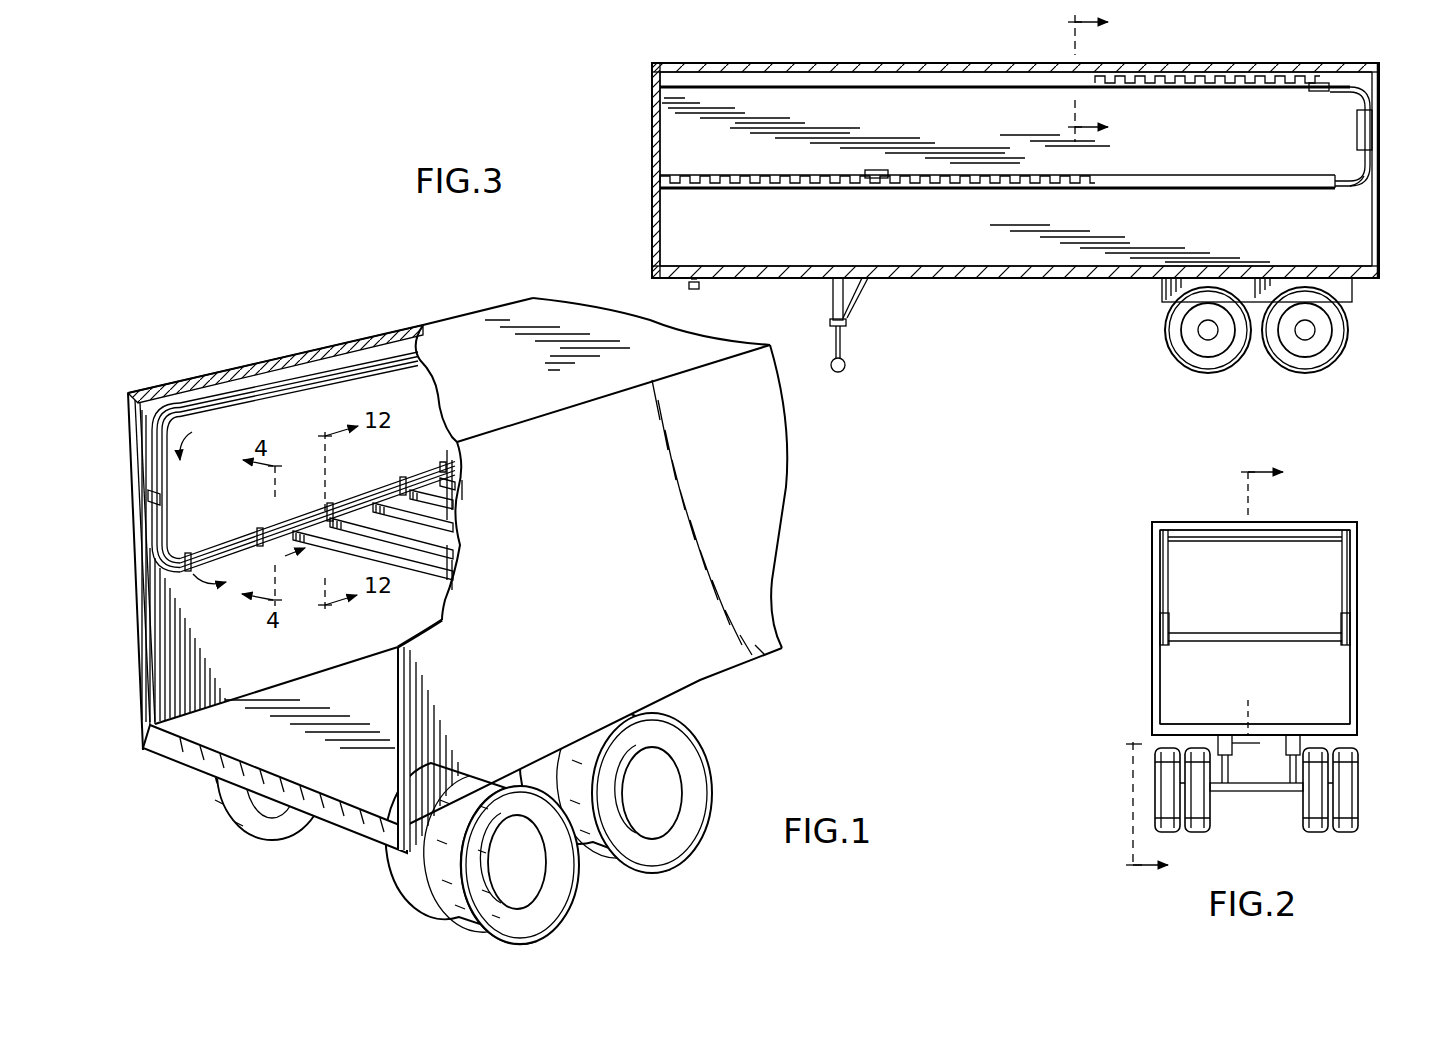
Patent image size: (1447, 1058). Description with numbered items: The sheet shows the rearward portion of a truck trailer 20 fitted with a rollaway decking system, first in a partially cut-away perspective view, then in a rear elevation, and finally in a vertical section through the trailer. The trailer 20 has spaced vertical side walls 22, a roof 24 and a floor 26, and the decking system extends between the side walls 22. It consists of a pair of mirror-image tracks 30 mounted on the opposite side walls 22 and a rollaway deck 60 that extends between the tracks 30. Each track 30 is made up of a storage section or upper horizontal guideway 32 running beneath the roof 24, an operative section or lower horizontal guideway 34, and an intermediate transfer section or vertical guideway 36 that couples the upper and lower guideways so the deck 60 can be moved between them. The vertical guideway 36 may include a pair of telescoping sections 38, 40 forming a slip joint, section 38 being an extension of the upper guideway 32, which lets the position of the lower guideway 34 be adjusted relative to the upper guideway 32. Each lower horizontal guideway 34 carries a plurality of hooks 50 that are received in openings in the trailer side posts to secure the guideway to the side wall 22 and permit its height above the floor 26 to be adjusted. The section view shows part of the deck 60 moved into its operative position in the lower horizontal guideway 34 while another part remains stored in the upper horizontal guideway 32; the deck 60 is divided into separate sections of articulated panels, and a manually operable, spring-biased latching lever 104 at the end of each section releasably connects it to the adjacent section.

In FIG. 3, the truck trailer 20 is at (647, 80).
In FIG. 2, the truck trailer 20 is at (1149, 558).
In FIG. 1, the truck trailer 20 is at (706, 698).
In FIG. 3, the side walls 22 is at (1283, 250).
In FIG. 2, the side walls 22 is at (1152, 672).
In FIG. 1, the side walls 22 is at (140, 677).
In FIG. 3, the roof 24 is at (858, 64).
In FIG. 2, the roof 24 is at (1182, 523).
In FIG. 1, the roof 24 is at (468, 322).
In FIG. 3, the floor 26 is at (978, 270).
In FIG. 2, the floor 26 is at (1308, 722).
In FIG. 1, the floor 26 is at (290, 747).
In FIG. 3, the tracks 30 is at (727, 90).
In FIG. 2, the tracks 30 is at (1169, 586).
In FIG. 1, the tracks 30 is at (146, 430).
In FIG. 3, the upper horizontal guideway 32 is at (835, 80).
In FIG. 1, the upper horizontal guideway 32 is at (305, 372).
In FIG. 3, the lower horizontal guideway 34 is at (1163, 186).
In FIG. 1, the lower horizontal guideway 34 is at (238, 550).
In FIG. 3, the vertical guideway 36 is at (1353, 131).
In FIG. 1, the vertical guideway 36 is at (157, 498).
In FIG. 3, the telescoping section 38 is at (1364, 97).
In FIG. 3, the telescoping section 40 is at (1357, 181).
In FIG. 1, the hooks 50 is at (258, 530).
In FIG. 2, the rollaway deck 60 is at (1253, 631).
In FIG. 1, the rollaway deck 60 is at (417, 572).
In FIG. 3, the latching lever 104 is at (873, 172).